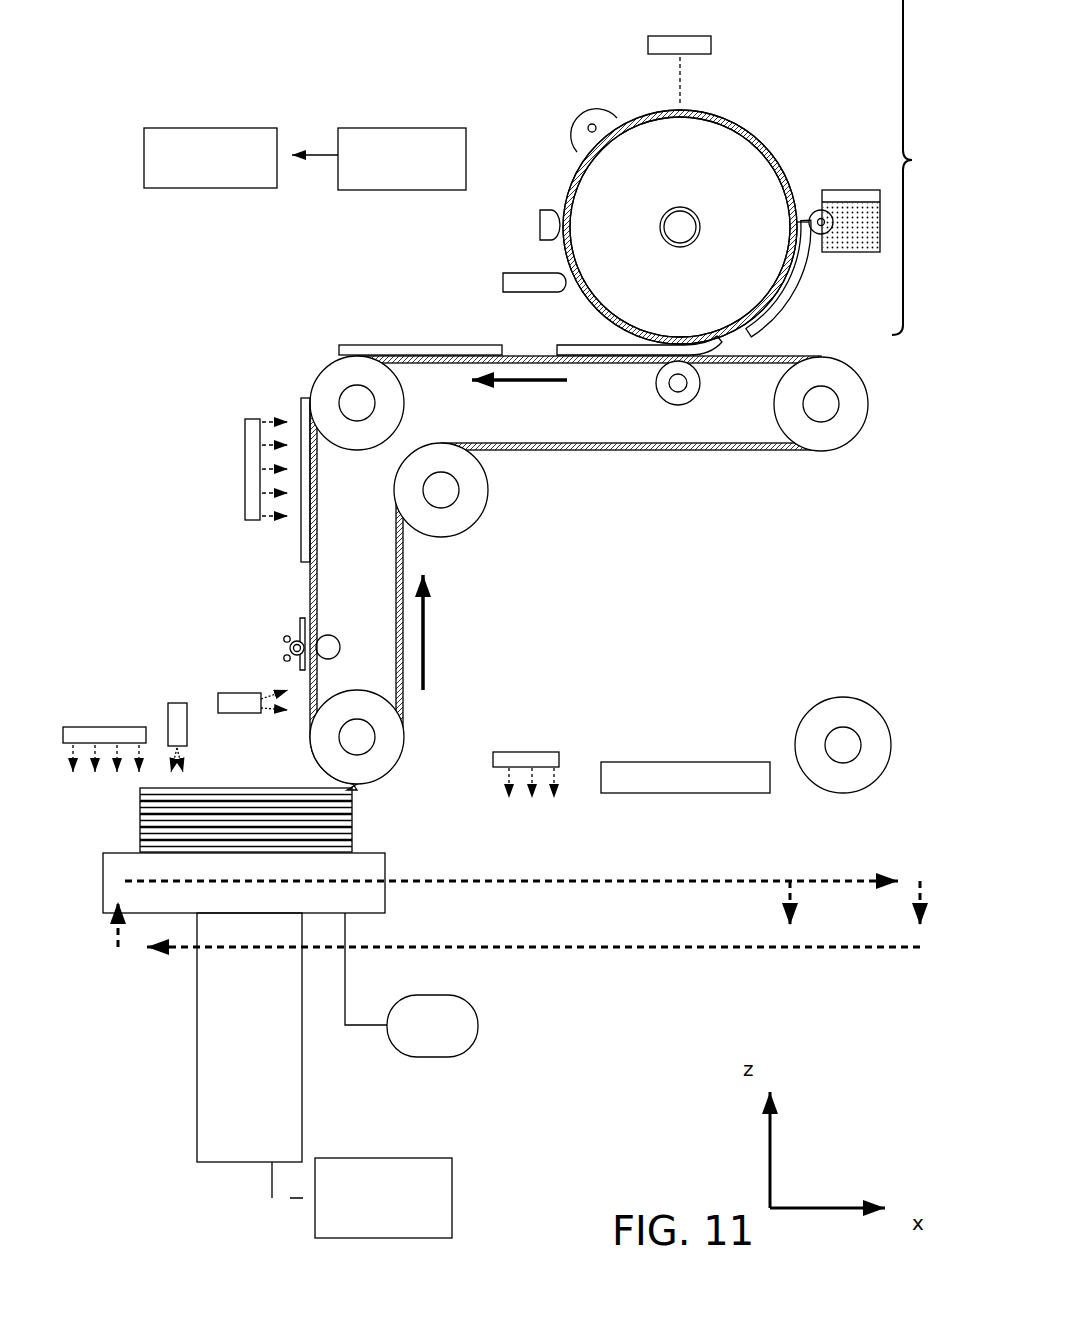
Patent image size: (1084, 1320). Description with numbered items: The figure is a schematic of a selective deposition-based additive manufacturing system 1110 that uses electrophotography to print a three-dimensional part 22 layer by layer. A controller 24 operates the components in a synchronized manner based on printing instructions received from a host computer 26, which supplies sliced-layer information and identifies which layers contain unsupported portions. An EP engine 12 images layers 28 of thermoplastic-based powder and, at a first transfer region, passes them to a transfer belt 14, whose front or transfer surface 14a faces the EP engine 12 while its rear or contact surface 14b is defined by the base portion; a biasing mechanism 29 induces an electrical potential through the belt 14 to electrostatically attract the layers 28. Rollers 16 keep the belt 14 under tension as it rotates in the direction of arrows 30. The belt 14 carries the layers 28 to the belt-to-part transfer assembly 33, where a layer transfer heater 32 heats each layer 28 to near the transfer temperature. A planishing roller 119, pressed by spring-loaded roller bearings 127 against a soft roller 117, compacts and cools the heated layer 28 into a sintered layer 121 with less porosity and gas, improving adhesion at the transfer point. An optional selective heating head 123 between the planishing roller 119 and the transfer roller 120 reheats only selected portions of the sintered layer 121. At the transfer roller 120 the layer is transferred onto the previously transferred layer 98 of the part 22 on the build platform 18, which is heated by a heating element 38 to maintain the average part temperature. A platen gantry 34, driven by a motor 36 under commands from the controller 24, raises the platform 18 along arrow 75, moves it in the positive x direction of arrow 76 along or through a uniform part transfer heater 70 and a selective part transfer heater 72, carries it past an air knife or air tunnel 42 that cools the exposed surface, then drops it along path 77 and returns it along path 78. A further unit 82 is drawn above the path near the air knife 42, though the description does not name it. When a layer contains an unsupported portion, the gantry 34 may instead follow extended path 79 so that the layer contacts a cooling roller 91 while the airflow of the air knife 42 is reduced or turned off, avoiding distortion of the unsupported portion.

The selective deposition-based additive manufacturing system 1110 is at (172, 34).
The controller 24 is at (150, 176).
The host computer 26 is at (392, 190).
The EP engine 12 is at (723, 172).
The transfer belt 14 is at (571, 545).
The front or transfer surface 14a is at (800, 345).
The rear or contact surface 14b is at (325, 492).
The rollers 16 is at (328, 378).
The imaged layers 28 is at (568, 345).
The biasing mechanism 29 is at (655, 385).
The arrows 30 is at (503, 385).
The layer transfer heater 32 is at (230, 470).
The soft roller 117 is at (341, 645).
The planishing roller 119 is at (290, 648).
The roller bearings 127 is at (288, 636).
The transfer roller 120 is at (407, 742).
The sintered layer 121 is at (308, 768).
The uniform part transfer heater 70 is at (96, 713).
The selective part transfer heater 72 is at (163, 695).
The selective heating head 123 is at (237, 695).
The previously transferred fully-supported layer 98 is at (140, 788).
The 3D part 22 is at (352, 810).
The build platform 18 is at (100, 878).
The platen gantry 34 is at (302, 1063).
The heating element 38 is at (478, 1022).
The motor 36 is at (425, 1158).
The arrow 76 is at (553, 884).
The path 77 is at (790, 890).
The path 78 is at (633, 950).
The extended path 79 is at (888, 882).
The arrow 75 is at (118, 935).
The curing station 82 is at (532, 740).
The air knife or air tunnel 42 is at (652, 762).
The cooling roller 91 is at (820, 700).
The belt-to-part transfer assembly 33 is at (850, 1000).